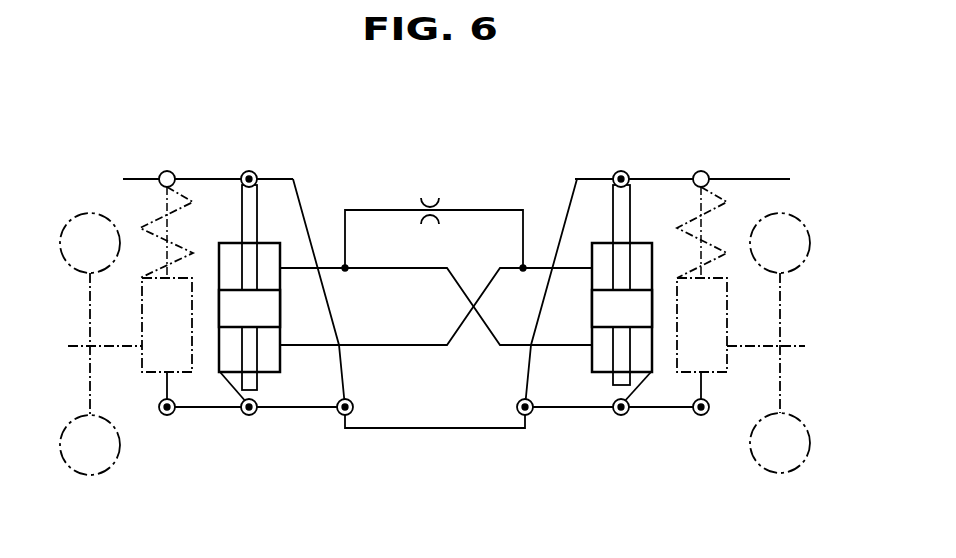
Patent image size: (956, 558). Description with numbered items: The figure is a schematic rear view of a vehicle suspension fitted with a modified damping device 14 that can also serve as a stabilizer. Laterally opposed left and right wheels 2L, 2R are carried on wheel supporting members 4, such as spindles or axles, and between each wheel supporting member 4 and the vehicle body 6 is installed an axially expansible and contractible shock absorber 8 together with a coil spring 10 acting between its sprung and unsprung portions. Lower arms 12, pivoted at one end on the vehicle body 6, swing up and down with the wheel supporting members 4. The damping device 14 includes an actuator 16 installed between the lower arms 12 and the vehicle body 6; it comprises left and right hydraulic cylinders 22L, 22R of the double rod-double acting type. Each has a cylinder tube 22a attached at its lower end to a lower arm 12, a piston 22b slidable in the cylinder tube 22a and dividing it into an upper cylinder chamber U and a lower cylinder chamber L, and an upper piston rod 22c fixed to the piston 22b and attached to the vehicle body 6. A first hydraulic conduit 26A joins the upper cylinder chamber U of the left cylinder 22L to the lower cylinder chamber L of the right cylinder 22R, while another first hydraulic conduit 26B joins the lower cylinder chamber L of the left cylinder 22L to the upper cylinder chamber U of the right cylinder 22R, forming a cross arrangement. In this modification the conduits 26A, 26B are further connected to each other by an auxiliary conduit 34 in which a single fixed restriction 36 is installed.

The left wheel 2L is at (72, 262).
The right wheel 2R is at (765, 470).
The wheel supporting member 4 is at (80, 350).
The vehicle body 6 is at (430, 430).
The shock absorber 8 is at (142, 290).
The coil spring 10 is at (145, 230).
The lower arm 12 is at (213, 409).
The damping device 14 is at (273, 93).
The actuator 16 is at (526, 172).
The left wheel side hydraulic cylinder 22L is at (417, 316).
The right wheel side hydraulic cylinder 22R is at (581, 377).
The cylinder tube 22a is at (282, 357).
The piston 22b is at (270, 303).
The upper piston rod 22c is at (242, 228).
The first hydraulic conduit 26A is at (397, 270).
The first hydraulic conduit 26B is at (420, 347).
The auxiliary conduit 34 is at (352, 210).
The fixed restriction 36 is at (437, 196).
The upper cylinder chamber U is at (267, 255).
The lower cylinder chamber L is at (223, 353).